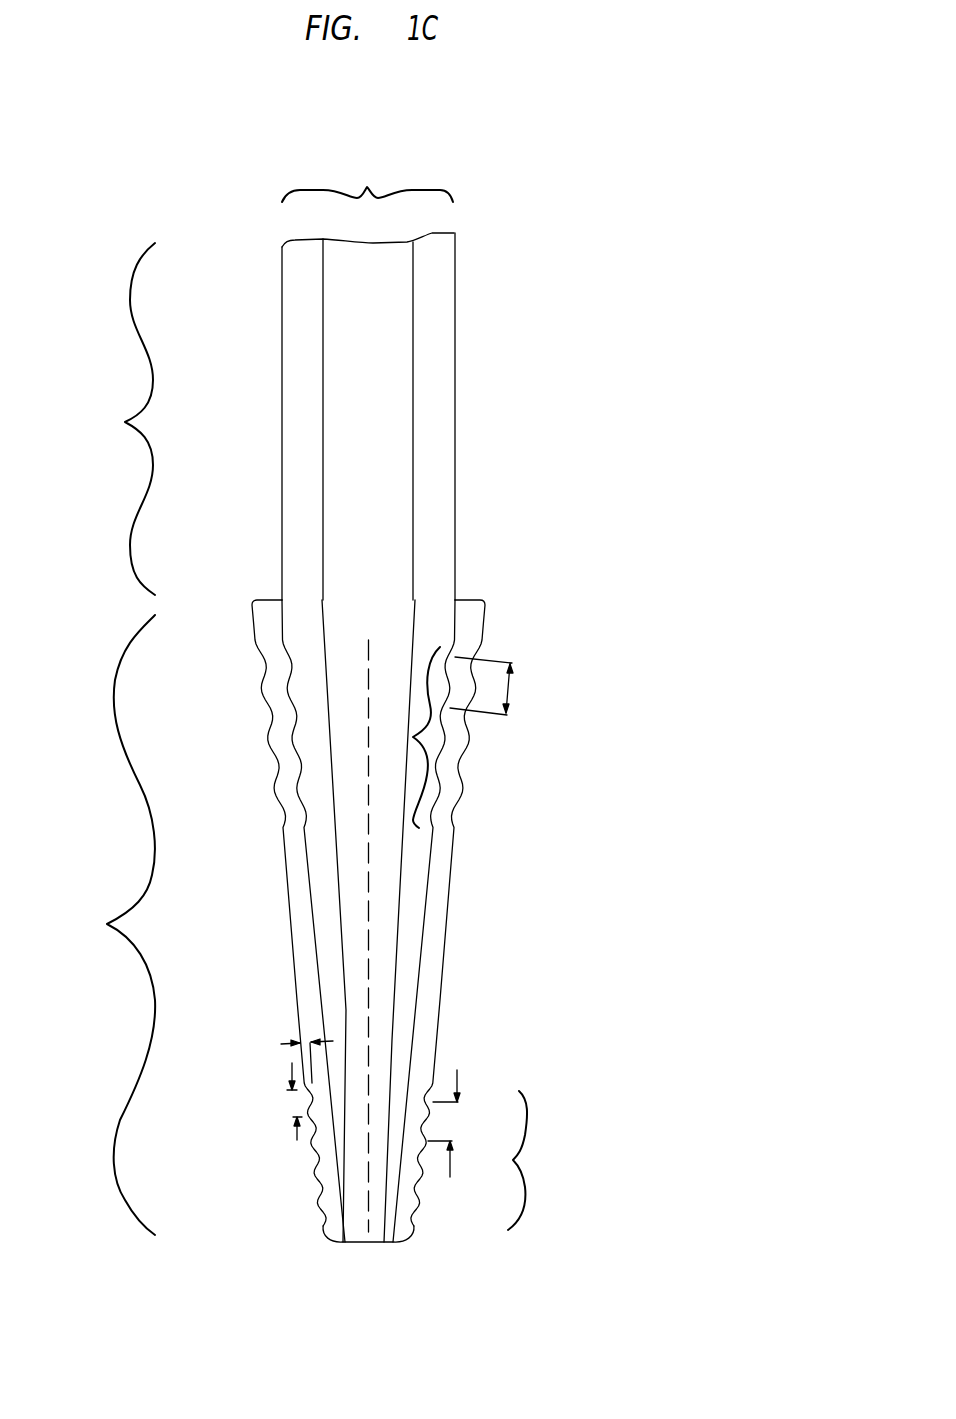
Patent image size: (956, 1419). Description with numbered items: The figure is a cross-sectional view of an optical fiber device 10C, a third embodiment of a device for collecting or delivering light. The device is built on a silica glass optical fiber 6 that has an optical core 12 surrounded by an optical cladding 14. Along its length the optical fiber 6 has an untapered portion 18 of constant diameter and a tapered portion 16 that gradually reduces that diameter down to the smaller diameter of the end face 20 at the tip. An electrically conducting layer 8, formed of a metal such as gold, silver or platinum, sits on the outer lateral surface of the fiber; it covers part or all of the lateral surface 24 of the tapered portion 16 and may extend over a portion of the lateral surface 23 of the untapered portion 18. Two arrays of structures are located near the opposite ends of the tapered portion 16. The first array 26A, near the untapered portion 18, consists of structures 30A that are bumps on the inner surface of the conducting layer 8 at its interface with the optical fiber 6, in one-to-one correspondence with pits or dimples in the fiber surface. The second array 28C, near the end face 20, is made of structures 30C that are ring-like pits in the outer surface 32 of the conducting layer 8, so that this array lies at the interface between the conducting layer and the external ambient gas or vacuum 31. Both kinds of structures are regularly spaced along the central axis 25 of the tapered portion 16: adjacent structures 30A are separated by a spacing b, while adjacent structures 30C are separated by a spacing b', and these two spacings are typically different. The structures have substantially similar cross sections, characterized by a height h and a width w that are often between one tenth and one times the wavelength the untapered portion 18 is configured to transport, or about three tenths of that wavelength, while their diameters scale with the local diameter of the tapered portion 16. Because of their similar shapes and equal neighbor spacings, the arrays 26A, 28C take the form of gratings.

The optical fiber device 10C is at (640, 402).
The silica glass optical fiber 6 is at (367, 178).
The optical cladding 14 is at (315, 406).
The optical core 12 is at (380, 406).
The untapered portion 18 is at (121, 419).
The tapered portion 16 is at (111, 925).
The lateral surface of untapered portion 23 is at (456, 546).
The central axis 25 is at (369, 644).
The array of structures 26A is at (406, 737).
The structures 30A is at (287, 715).
The structures 30C is at (318, 1177).
The lateral surface of tapered portion 24 is at (423, 971).
The electrically conducting layer 8 is at (435, 1006).
The outer surface of electrically conducting layer 32 is at (438, 1049).
The array of structures 28C is at (542, 1160).
The end face 20 is at (369, 1252).
The gas or vacuum 31 is at (702, 857).
The spacing b is at (500, 689).
The spacing b' is at (466, 1123).
The height h is at (293, 1058).
The width w is at (287, 1101).